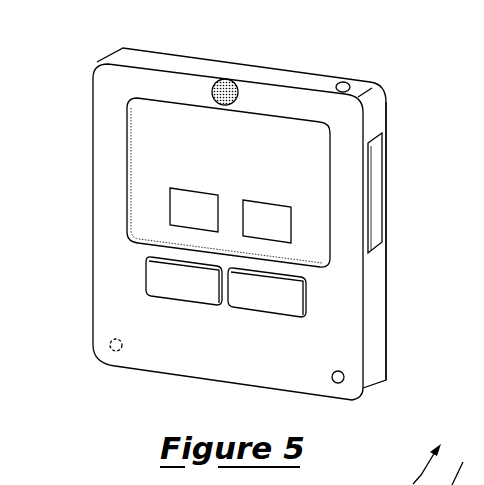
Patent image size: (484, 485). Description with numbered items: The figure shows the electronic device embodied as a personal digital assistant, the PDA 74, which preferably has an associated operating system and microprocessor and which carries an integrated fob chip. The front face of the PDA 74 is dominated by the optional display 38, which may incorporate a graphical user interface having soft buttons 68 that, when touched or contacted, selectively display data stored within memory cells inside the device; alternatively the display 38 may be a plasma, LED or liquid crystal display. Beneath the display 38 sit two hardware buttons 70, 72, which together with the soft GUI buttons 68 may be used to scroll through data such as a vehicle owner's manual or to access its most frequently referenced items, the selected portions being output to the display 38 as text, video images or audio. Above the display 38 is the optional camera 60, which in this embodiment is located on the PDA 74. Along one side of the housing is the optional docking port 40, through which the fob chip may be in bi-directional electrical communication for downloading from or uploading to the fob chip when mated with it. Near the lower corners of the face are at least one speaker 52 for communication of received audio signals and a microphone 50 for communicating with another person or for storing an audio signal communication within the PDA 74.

The personal digital assistant 74 is at (86, 203).
The display 38 is at (177, 127).
The camera 60 is at (226, 80).
The soft buttons 68 is at (193, 188).
The docking port 40 is at (373, 196).
The hardware button 70 is at (187, 288).
The hardware button 72 is at (268, 300).
The speaker 52 is at (118, 352).
The microphone 50 is at (345, 373).